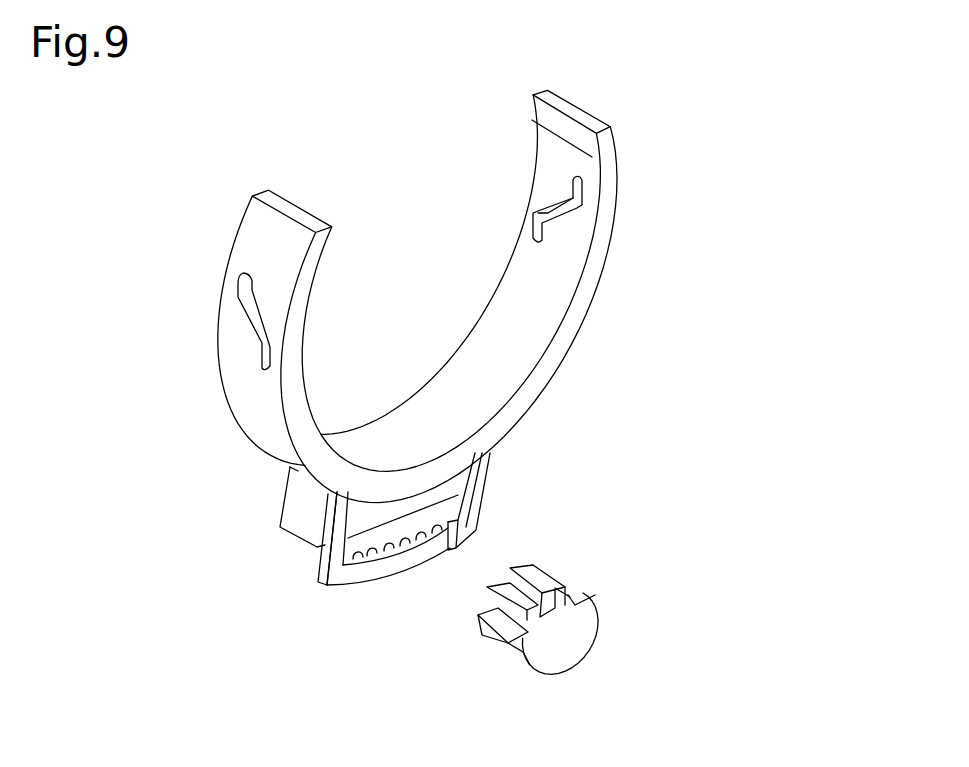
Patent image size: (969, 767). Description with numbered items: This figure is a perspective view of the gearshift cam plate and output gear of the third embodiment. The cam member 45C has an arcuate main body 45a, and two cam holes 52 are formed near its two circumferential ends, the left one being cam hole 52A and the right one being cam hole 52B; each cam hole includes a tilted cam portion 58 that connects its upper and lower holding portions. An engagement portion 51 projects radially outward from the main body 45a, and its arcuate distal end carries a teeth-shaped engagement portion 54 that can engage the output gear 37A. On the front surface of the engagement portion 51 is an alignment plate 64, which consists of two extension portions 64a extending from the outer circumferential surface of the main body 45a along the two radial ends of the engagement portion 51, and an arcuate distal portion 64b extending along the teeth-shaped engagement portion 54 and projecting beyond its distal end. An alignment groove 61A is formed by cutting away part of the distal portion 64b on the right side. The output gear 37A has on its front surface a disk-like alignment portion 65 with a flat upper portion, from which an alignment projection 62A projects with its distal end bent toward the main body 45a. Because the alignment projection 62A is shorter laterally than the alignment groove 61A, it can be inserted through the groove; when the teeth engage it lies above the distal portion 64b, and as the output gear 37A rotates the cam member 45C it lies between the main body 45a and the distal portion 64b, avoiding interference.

The main body 45a is at (587, 318).
The cam member 45C is at (681, 116).
The cam hole 52 is at (420, 262).
The cam hole 52A is at (242, 278).
The cam hole 52B is at (547, 197).
The cam portion 58 is at (245, 322).
The engagement portion 51 is at (285, 495).
The alignment plate 64 is at (405, 542).
The extension portions 64a is at (484, 470).
The distal portion 64b is at (368, 575).
The teeth-shaped engagement portion 54 is at (439, 535).
The alignment groove 61A is at (456, 548).
The output gear 37A is at (548, 601).
The alignment portion 65 is at (583, 623).
The alignment projection 62A is at (560, 593).